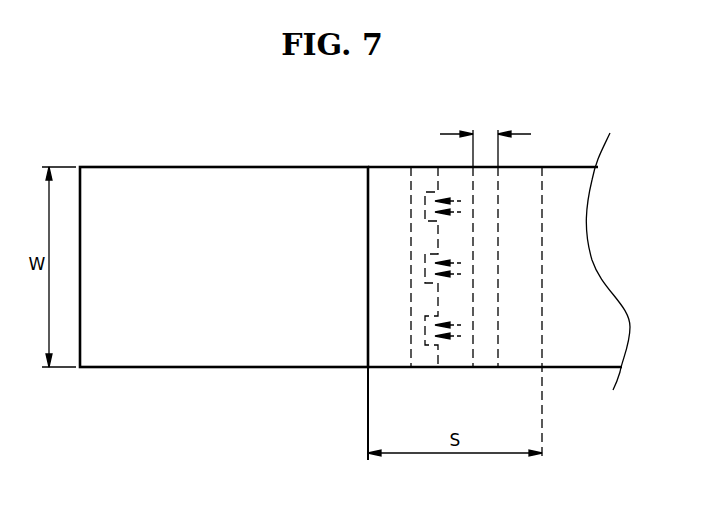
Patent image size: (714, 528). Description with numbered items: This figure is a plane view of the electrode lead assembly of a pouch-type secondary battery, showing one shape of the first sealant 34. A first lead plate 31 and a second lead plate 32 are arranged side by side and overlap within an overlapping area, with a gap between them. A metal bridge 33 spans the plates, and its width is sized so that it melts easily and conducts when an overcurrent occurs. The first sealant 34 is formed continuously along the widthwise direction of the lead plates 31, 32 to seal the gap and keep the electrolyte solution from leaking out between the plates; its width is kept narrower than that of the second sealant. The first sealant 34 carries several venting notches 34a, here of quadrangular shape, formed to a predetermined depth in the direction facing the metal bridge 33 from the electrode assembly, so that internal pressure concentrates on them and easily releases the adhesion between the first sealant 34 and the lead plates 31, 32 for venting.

The first lead plate 31 is at (573, 167).
The second lead plate 32 is at (127, 167).
The metal bridge 33 is at (484, 357).
The first sealant 34 is at (424, 357).
The venting notch 34a is at (427, 320).